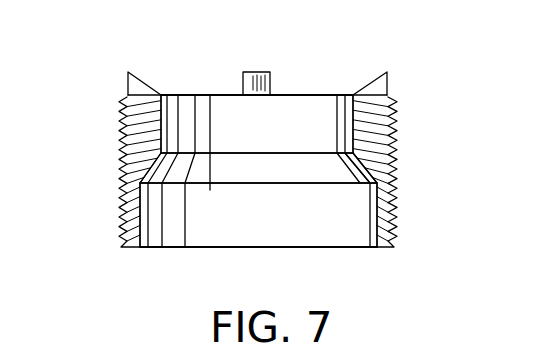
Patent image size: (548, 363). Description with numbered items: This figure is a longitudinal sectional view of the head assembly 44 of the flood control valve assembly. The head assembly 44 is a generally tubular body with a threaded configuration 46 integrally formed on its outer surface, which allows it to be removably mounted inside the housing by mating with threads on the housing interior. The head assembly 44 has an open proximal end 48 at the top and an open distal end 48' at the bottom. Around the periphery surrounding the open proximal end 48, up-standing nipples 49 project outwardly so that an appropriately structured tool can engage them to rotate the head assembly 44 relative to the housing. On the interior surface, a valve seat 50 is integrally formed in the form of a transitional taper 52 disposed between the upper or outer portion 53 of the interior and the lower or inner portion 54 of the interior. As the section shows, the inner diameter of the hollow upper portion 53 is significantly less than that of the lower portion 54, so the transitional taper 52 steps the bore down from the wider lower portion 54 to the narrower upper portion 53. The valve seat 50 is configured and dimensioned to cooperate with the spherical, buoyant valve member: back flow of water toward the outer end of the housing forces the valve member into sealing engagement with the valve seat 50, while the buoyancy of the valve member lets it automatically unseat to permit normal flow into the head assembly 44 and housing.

The head assembly 44 is at (413, 143).
The threaded configuration 46 is at (119, 176).
The open proximal end 48 is at (257, 57).
The open distal end 48' is at (279, 283).
The up-standing nipples 49 is at (133, 83).
The valve seat 50 is at (360, 180).
The transitional taper 52 is at (165, 171).
The upper or outer portion 53 is at (271, 136).
The lower or inner portion 54 is at (270, 220).